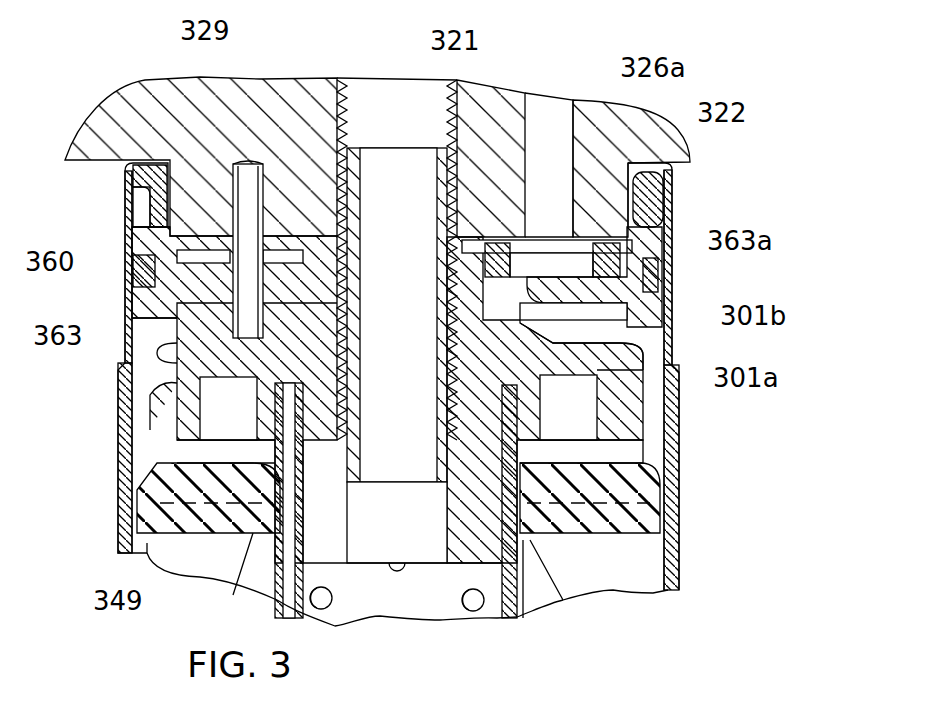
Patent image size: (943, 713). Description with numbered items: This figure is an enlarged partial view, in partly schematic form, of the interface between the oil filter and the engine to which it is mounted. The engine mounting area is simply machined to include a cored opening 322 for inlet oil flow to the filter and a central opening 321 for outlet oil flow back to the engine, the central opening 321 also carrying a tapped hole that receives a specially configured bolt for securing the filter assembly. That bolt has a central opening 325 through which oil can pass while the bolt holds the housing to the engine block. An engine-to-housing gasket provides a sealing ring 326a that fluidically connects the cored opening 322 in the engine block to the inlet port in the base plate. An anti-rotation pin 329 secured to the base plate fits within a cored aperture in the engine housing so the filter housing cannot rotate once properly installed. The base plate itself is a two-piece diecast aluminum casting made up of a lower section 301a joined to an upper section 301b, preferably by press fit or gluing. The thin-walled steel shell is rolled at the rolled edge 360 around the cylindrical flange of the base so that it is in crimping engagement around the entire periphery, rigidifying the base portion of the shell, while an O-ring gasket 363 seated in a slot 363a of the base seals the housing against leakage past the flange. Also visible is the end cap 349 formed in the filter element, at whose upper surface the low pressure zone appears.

The anti-rotation pin 329 is at (218, 172).
The central opening 321 is at (400, 155).
The sealing ring 326a is at (492, 258).
The cored opening 322 is at (557, 167).
The slot 363a is at (670, 278).
The rolled edge 360 is at (118, 213).
The O-ring gasket 363 is at (130, 275).
The upper section 301b is at (627, 298).
The lower section 301a is at (627, 357).
The central opening of bolt 325 is at (400, 463).
The end cap 349 is at (168, 547).